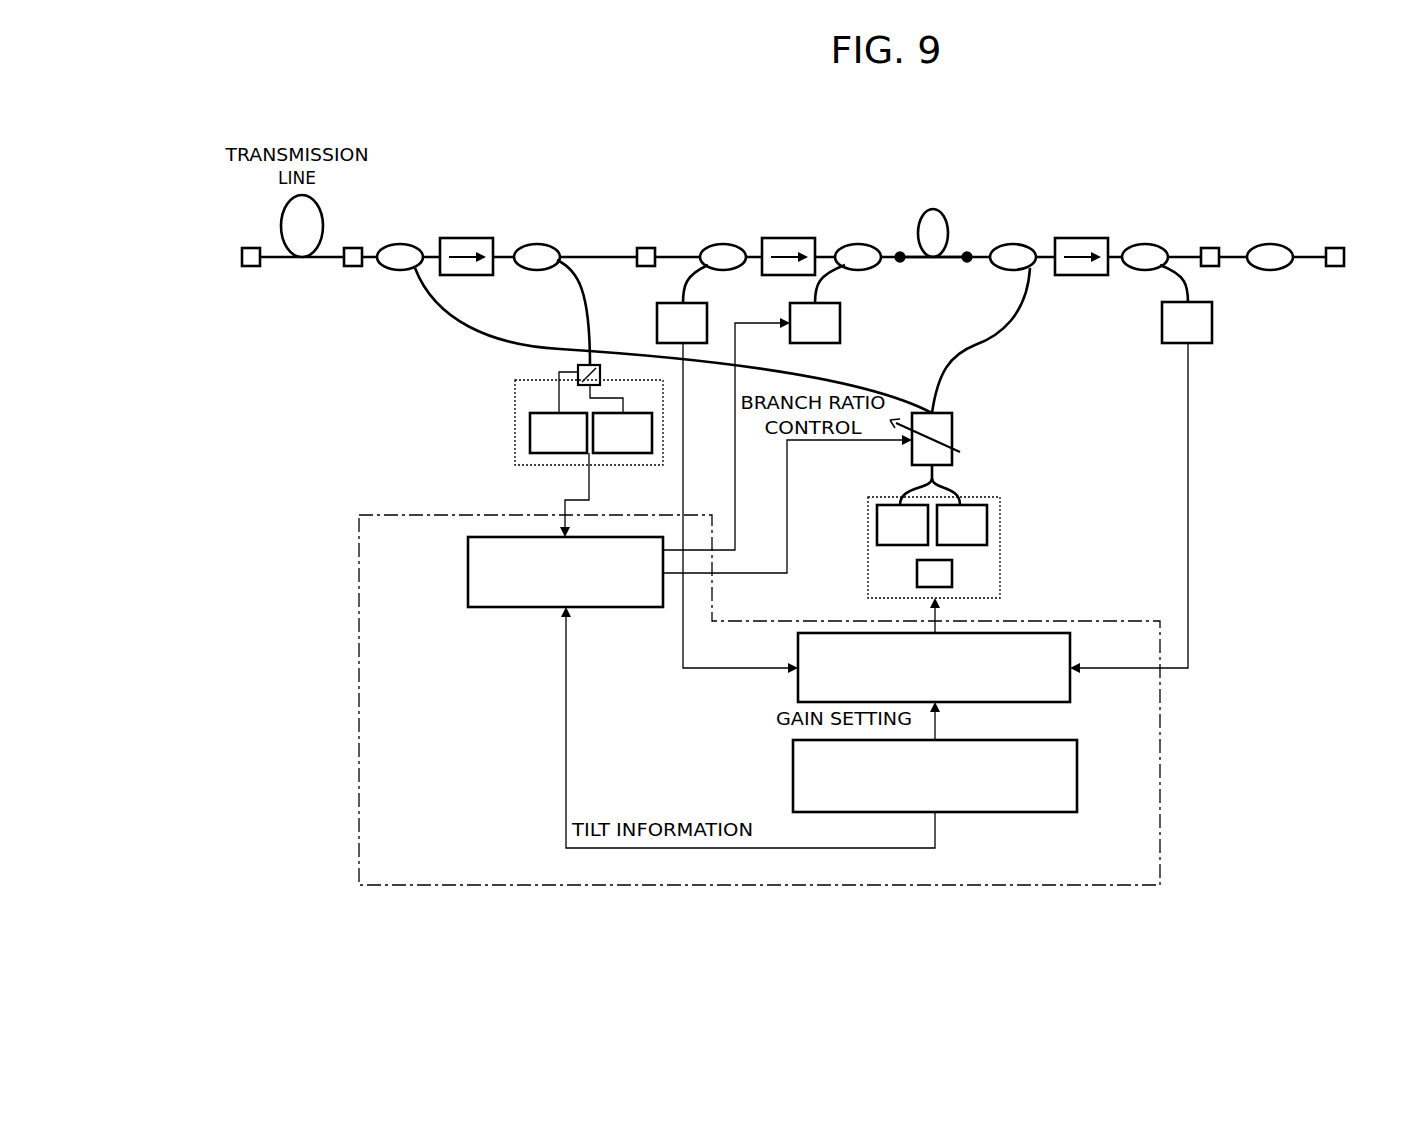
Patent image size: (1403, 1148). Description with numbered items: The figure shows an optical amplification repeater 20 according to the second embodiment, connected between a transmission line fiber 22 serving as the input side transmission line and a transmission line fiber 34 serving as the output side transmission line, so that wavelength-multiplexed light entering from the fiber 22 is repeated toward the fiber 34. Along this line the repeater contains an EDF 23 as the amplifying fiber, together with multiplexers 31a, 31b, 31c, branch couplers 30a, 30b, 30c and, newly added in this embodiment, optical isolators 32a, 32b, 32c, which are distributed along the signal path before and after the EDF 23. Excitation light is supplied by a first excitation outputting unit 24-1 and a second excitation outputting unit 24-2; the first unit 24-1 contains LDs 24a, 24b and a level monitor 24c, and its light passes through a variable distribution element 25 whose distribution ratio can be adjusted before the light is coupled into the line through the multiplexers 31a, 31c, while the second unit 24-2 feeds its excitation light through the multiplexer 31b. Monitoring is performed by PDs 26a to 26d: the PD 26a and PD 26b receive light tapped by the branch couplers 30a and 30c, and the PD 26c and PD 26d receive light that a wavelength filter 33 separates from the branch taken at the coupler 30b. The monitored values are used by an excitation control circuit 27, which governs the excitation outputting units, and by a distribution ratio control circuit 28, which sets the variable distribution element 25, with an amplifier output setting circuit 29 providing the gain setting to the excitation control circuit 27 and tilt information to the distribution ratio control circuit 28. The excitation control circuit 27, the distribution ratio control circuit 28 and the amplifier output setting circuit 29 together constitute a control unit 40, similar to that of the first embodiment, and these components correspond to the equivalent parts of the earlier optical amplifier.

The optical amplification repeater 20 is at (1218, 760).
The transmission line fiber 22 is at (282, 217).
The EDF 23 is at (945, 240).
The first excitation outputting unit 24-1 is at (1000, 550).
The second excitation outputting unit 24-2 is at (840, 323).
The LD 24a is at (877, 525).
The LD 24b is at (987, 525).
The level monitor 24c is at (917, 573).
The variable distribution element 25 is at (952, 430).
The PD 26a is at (657, 325).
The PD 26b is at (1212, 322).
The PD 26c is at (530, 433).
The PD 26d is at (625, 453).
The excitation control circuit 27 is at (1022, 633).
The distribution ratio control circuit 28 is at (468, 573).
The amplifier output setting circuit 29 is at (1077, 775).
The branch coupler 30a is at (723, 244).
The branch coupler 30b is at (537, 244).
The branch coupler 30c is at (1145, 244).
The multiplexer 31a is at (400, 244).
The multiplexer 31b is at (858, 244).
The multiplexer 31c is at (1013, 244).
The optical isolator 32a is at (468, 238).
The optical isolator 32b is at (787, 238).
The optical isolator 32c is at (1080, 276).
The wavelength filter 33 is at (578, 370).
The transmission line fiber 34 is at (1270, 244).
The control unit 40 is at (768, 885).